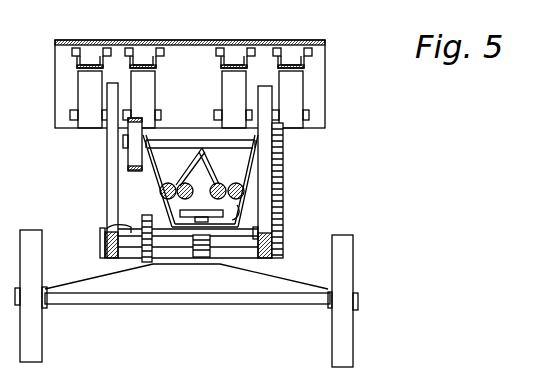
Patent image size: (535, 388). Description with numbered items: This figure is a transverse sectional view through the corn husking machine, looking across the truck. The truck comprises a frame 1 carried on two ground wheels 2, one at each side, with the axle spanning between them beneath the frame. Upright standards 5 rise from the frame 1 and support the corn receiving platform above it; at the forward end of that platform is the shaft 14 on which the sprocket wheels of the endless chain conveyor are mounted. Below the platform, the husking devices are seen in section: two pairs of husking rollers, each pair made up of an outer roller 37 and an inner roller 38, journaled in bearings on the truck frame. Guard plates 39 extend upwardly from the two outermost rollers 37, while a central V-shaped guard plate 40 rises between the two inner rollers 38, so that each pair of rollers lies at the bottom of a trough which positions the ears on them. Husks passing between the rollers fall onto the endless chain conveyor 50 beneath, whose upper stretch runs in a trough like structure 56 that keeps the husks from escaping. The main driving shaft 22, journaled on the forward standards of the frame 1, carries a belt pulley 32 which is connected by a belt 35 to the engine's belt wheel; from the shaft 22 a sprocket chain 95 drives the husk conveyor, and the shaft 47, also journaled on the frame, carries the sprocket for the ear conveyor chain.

The frame 1 is at (105, 253).
The ground wheels 2 is at (343, 285).
The upright standards 5 is at (110, 201).
The shaft 14 is at (190, 44).
The main driving shaft 22 is at (162, 141).
The belt pulley 32 is at (137, 133).
The belt 35 is at (134, 172).
The husking roller 37 is at (160, 192).
The husking roller 38 is at (177, 183).
The guard plates 39 is at (150, 158).
The central V-shaped guard plate 40 is at (202, 150).
The shaft 47 is at (106, 229).
The endless chain conveyor 50 is at (201, 208).
The trough like structure 56 is at (236, 212).
The sprocket chain 95 is at (278, 231).